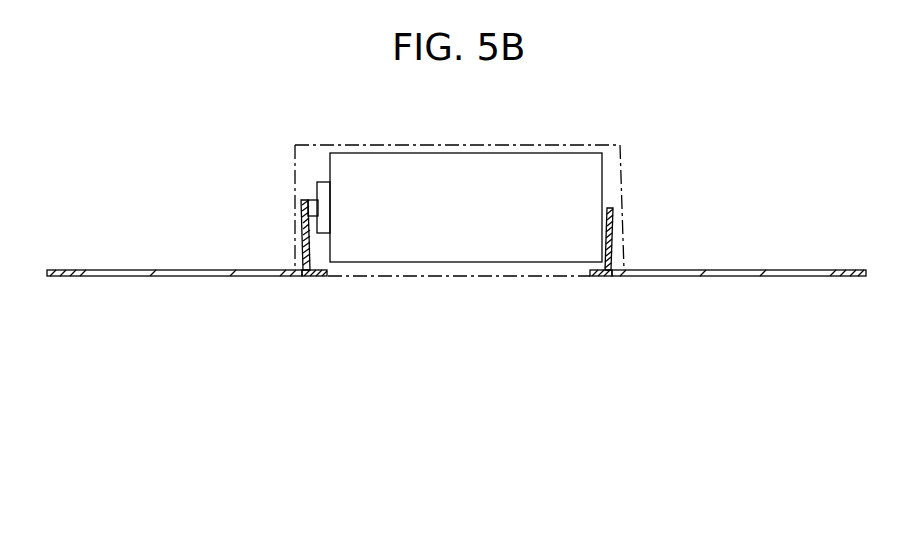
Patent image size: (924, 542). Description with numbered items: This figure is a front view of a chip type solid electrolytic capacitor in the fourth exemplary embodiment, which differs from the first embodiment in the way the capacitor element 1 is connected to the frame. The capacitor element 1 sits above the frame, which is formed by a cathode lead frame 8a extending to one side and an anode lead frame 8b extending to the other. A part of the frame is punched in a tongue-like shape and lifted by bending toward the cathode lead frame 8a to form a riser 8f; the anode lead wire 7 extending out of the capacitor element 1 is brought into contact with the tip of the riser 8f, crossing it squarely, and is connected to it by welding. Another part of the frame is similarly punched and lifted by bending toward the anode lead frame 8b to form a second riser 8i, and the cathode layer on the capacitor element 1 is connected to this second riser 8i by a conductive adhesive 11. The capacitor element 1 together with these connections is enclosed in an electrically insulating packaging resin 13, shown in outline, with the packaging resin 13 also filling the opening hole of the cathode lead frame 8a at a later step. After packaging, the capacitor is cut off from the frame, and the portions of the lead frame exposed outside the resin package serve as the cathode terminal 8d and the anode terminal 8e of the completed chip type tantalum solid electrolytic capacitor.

The capacitor element 1 is at (360, 190).
The anode lead wire 7 is at (313, 205).
The packaging resin 13 is at (540, 148).
The riser 8f is at (300, 212).
The anode terminal 8e is at (318, 277).
The anode lead frame 8b is at (164, 270).
The second riser 8i is at (615, 222).
The cathode terminal 8d is at (605, 272).
The cathode lead frame 8a is at (730, 270).
The conductive adhesive 11 is at (590, 272).